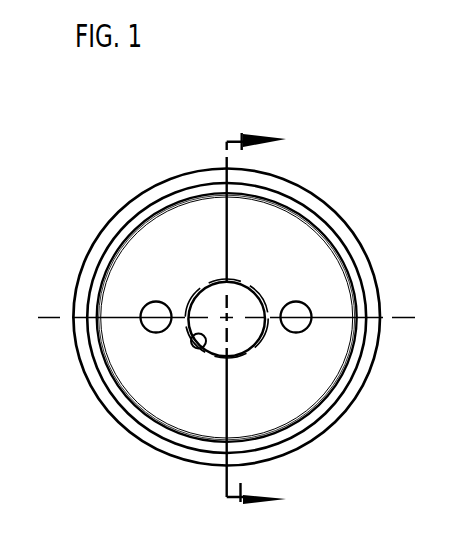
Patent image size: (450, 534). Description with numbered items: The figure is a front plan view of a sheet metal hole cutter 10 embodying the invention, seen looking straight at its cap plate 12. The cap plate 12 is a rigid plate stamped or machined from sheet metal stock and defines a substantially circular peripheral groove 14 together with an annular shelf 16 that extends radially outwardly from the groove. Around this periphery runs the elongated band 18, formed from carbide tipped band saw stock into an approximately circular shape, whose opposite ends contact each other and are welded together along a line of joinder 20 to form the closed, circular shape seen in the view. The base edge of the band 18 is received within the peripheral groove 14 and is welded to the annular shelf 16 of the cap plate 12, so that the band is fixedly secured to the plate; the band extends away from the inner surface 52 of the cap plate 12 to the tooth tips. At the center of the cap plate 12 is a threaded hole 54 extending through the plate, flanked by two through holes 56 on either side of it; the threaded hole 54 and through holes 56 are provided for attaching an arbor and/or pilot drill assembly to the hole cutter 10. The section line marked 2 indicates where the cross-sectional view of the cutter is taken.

The section line 2- 2 is at (267, 318).
The sheet material hole cutter 10 is at (376, 208).
The cap plate 12 is at (145, 190).
The peripheral groove 14 is at (122, 243).
The annular shelf 16 is at (82, 287).
The elongated band 18 is at (133, 413).
The line of joinder 20 is at (288, 209).
The inner surface 52 is at (290, 386).
The threaded hole 54 is at (194, 348).
The through holes 56 is at (310, 312).